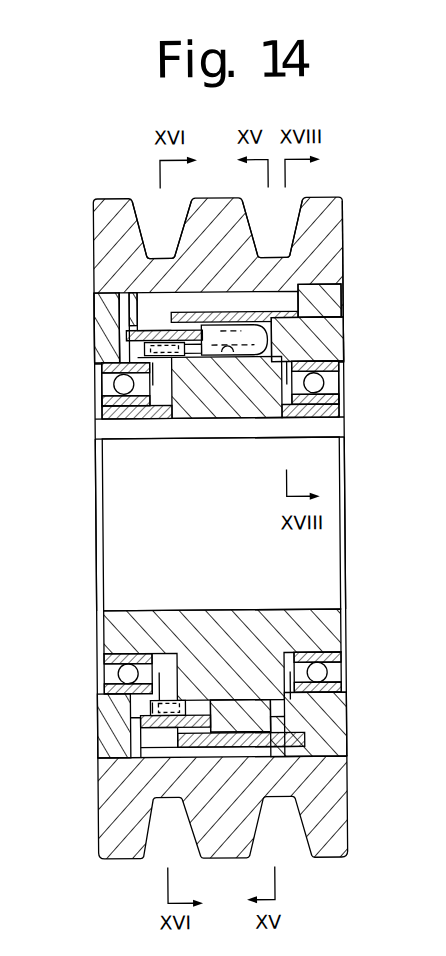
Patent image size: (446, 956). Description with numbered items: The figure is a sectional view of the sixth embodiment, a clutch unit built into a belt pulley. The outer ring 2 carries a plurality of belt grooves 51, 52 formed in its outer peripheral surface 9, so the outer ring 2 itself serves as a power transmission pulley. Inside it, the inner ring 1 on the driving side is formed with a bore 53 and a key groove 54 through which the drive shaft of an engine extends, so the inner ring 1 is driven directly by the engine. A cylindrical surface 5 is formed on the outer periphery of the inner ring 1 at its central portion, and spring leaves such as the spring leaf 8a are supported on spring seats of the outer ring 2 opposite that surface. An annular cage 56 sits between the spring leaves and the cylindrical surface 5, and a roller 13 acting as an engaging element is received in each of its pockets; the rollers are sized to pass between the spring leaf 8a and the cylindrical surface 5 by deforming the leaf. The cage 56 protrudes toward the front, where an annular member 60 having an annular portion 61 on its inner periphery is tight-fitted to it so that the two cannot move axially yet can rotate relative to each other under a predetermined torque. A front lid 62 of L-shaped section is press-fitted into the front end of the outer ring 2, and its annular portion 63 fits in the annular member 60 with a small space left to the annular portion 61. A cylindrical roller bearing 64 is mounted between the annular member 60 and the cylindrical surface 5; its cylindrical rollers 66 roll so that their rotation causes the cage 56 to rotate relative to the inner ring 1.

The inner ring 1 is at (110, 625).
The outer ring 2 is at (327, 272).
The cylindrical surface 5 is at (231, 343).
The spring leaf 8a is at (340, 322).
The outer peripheral surface 9 is at (347, 241).
The roller 13 is at (338, 357).
The belt groove 51 is at (161, 254).
The belt groove 52 is at (296, 219).
The bore 53 is at (138, 610).
The key groove 54 is at (113, 428).
The annular cage 56 is at (337, 708).
The annular member 60 is at (153, 284).
The annular portion 61 is at (105, 764).
The front lid 62 is at (110, 308).
The annular portion 63 is at (128, 718).
The cylindrical roller bearing 64 is at (170, 362).
The cylindrical roller 66 is at (165, 690).